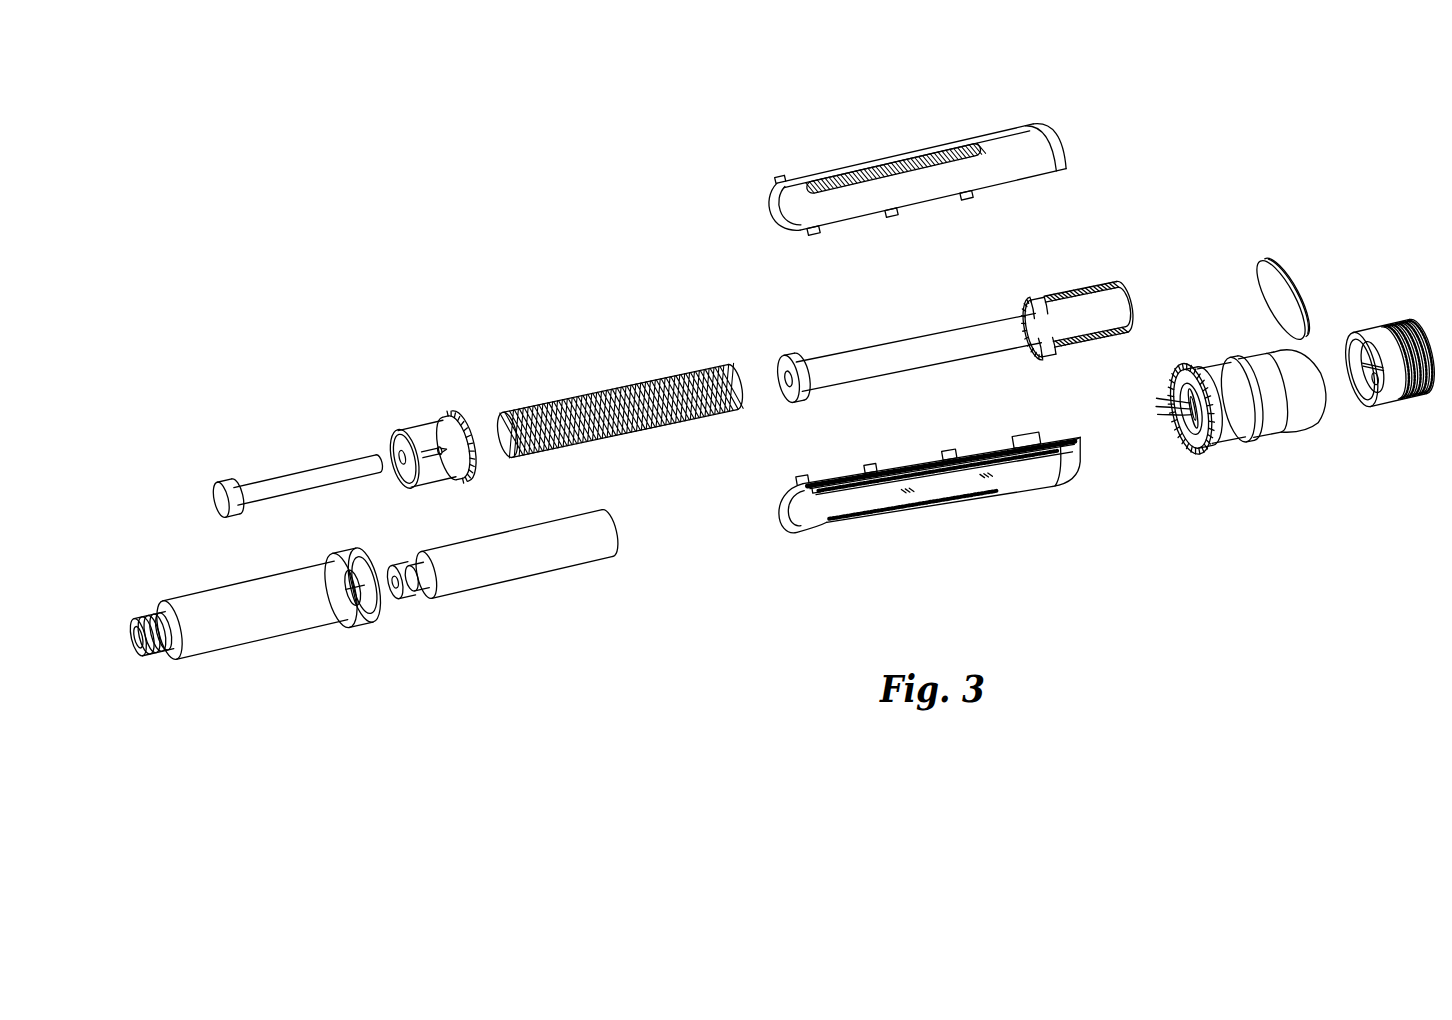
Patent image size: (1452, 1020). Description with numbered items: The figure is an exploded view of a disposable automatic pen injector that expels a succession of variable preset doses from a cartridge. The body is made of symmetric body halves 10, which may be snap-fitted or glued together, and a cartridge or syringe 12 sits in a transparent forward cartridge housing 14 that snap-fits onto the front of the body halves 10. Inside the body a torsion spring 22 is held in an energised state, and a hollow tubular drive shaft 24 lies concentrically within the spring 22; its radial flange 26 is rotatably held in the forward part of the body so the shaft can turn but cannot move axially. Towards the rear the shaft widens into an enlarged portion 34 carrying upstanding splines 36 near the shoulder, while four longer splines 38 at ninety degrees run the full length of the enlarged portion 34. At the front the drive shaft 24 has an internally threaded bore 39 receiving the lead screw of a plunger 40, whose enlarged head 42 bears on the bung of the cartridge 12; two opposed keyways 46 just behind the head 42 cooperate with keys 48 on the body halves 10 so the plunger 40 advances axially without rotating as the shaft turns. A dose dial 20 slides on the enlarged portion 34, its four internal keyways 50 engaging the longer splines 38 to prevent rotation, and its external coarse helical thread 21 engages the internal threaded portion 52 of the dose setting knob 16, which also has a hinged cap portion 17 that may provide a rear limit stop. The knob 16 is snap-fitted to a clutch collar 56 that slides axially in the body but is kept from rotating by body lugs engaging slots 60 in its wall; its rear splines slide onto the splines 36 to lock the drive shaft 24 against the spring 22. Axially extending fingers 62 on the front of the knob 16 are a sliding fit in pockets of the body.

The body half 10 is at (885, 303).
The cartridge 12 is at (527, 561).
The cartridge housing 14 is at (283, 641).
The dose setting knob 16 is at (1222, 428).
The hinged cap portion 17 is at (1287, 273).
The dose dial 20 is at (1382, 376).
The coarse helical thread 21 is at (1419, 392).
The torsion spring 22 is at (608, 386).
The drive shaft 24 is at (970, 329).
The radial flange 26 is at (802, 365).
The enlarged portion 34 is at (1109, 273).
The splines 36 is at (1027, 296).
The longer splines 38 is at (1126, 316).
The internally threaded bore 39 is at (789, 398).
The plunger 40 is at (282, 482).
The enlarged head 42 is at (218, 503).
The keyways 46 is at (317, 480).
The keys 48 is at (778, 222).
The internal keyways 50 is at (1358, 405).
The internal threaded portion 52 is at (1206, 442).
The clutch collar 56 is at (439, 419).
The slots 60 is at (445, 448).
The fingers 62 is at (1146, 390).